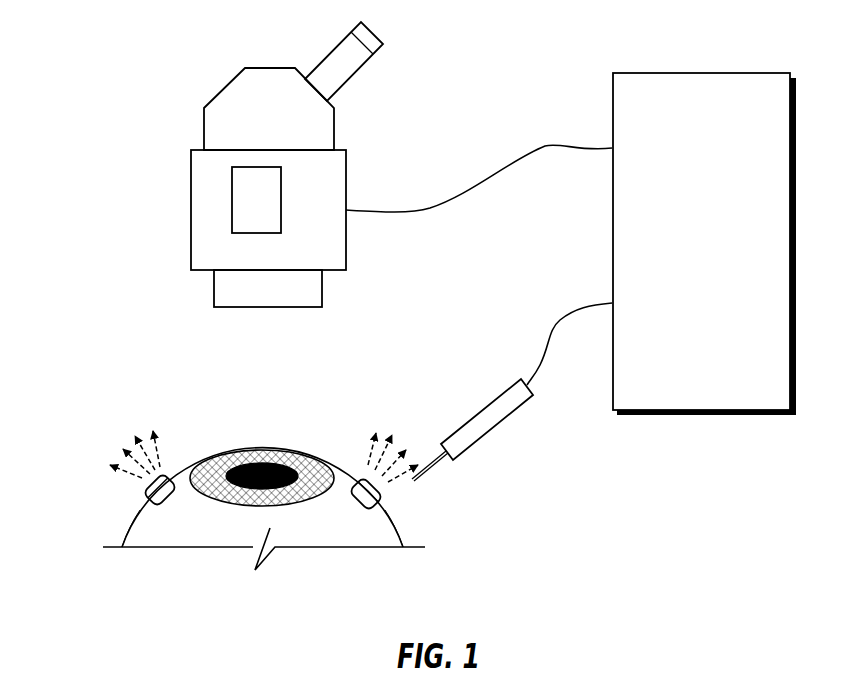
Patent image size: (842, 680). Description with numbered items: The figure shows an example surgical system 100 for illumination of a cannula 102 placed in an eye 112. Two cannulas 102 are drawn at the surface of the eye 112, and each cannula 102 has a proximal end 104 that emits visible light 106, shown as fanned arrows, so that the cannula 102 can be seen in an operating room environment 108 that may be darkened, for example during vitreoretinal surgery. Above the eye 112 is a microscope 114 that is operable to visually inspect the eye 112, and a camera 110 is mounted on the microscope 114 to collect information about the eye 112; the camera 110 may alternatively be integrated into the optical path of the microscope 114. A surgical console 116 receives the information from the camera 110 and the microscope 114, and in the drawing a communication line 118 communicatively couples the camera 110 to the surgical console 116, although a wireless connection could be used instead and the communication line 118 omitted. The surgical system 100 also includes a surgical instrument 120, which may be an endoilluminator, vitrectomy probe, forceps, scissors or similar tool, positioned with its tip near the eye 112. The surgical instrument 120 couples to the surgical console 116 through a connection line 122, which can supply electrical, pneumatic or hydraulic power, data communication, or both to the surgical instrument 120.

The surgical system 100 is at (124, 44).
The cannula 102 is at (160, 514).
The proximal end 104 is at (148, 496).
The visible light 106 is at (160, 467).
The operating room environment 108 is at (96, 228).
The camera 110 is at (281, 200).
The eye 112 is at (308, 535).
The microscope 114 is at (222, 95).
The surgical console 116 is at (630, 72).
The communication line 118 is at (518, 160).
The surgical instrument 120 is at (493, 430).
The connection line 122 is at (553, 335).